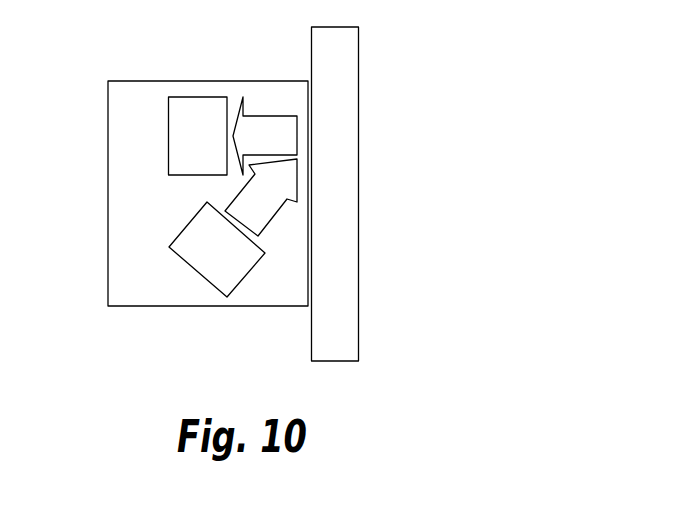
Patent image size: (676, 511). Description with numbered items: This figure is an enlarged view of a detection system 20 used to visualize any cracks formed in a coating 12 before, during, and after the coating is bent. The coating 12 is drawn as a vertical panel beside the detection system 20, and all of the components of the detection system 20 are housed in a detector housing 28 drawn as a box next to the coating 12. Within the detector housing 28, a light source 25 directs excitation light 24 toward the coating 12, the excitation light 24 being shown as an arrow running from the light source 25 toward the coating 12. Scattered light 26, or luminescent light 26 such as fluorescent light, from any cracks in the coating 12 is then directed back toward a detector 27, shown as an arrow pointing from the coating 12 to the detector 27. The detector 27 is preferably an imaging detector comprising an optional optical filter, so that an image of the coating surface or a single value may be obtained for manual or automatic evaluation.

The detection system 20 is at (448, 43).
The coating 12 is at (359, 67).
The detector housing 28 is at (108, 177).
The detector 27 is at (196, 97).
The scattered light 26 is at (265, 136).
The excitation light 24 is at (261, 197).
The light source 25 is at (209, 281).